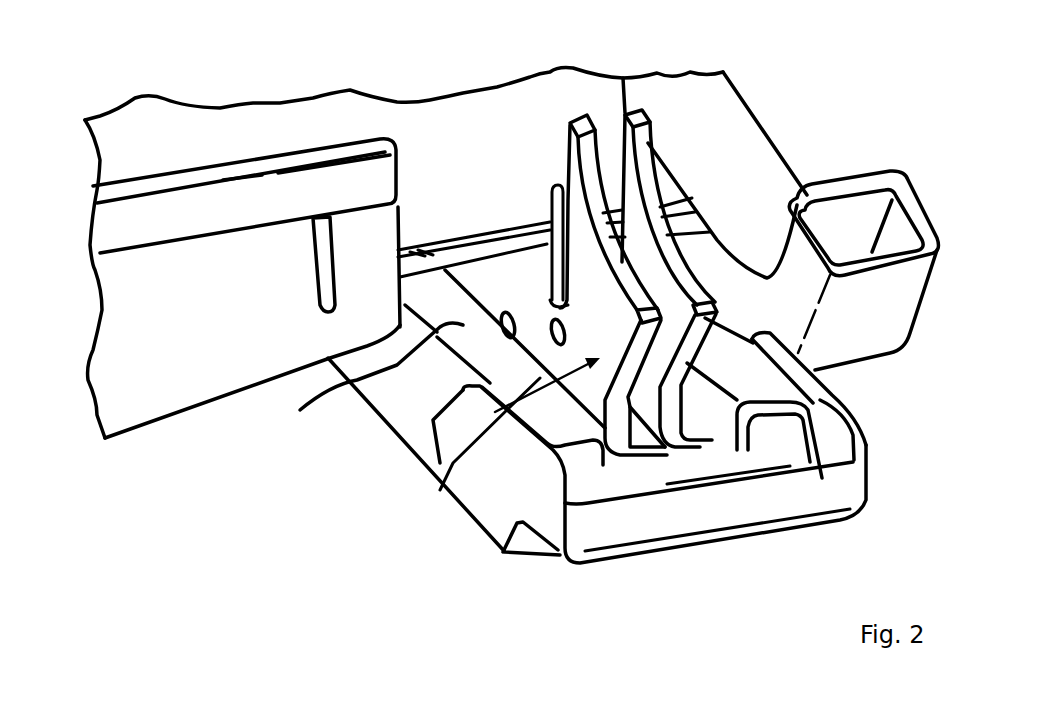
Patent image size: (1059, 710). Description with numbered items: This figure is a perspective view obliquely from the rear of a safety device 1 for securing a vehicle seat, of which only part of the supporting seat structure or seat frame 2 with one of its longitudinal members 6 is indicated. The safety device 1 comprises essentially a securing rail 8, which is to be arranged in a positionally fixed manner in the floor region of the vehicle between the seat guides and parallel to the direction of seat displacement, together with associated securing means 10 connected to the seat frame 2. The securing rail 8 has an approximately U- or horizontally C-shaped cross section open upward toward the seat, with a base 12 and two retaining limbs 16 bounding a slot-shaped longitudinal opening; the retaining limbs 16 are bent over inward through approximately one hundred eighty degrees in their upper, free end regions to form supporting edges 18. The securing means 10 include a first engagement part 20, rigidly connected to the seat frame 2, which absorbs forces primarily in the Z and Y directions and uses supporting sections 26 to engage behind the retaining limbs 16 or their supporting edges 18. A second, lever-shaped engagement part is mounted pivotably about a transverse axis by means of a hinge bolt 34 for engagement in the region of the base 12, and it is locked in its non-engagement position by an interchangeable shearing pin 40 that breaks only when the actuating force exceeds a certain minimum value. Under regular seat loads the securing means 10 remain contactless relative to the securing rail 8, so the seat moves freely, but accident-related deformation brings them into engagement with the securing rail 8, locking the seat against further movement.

The safety device 1 is at (352, 432).
The seat frame 2 is at (432, 122).
The longitudinal member 6 is at (757, 167).
The securing rail 8 is at (402, 438).
The securing means 10 is at (713, 440).
The base 12 is at (640, 480).
The retaining limbs 16 is at (840, 400).
The supporting edges 18 is at (613, 470).
The first engagement part 20 is at (443, 490).
The supporting sections 26 is at (758, 460).
The hinge bolt 34 is at (462, 275).
The shearing pin 40 is at (489, 273).